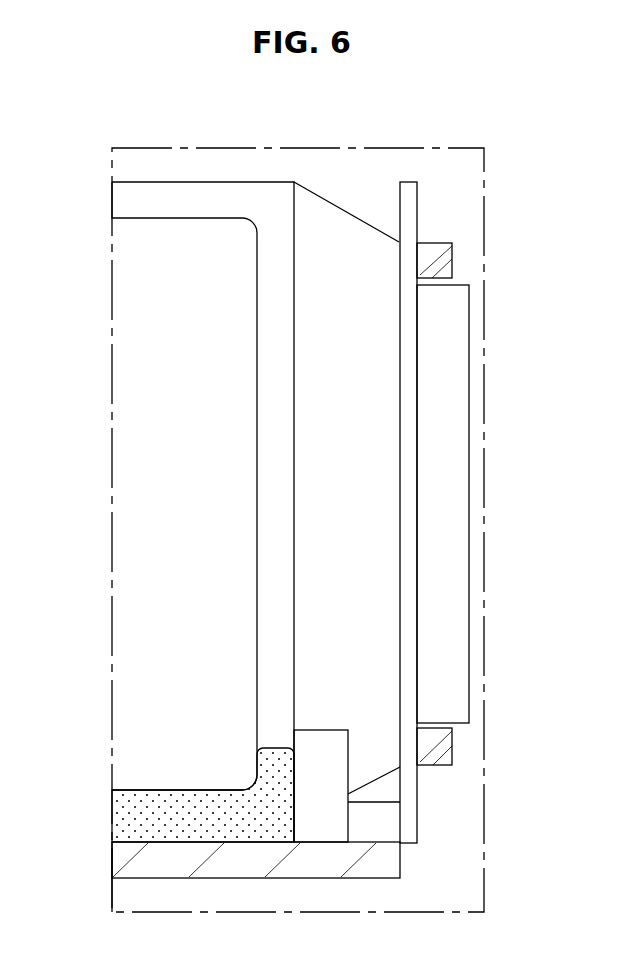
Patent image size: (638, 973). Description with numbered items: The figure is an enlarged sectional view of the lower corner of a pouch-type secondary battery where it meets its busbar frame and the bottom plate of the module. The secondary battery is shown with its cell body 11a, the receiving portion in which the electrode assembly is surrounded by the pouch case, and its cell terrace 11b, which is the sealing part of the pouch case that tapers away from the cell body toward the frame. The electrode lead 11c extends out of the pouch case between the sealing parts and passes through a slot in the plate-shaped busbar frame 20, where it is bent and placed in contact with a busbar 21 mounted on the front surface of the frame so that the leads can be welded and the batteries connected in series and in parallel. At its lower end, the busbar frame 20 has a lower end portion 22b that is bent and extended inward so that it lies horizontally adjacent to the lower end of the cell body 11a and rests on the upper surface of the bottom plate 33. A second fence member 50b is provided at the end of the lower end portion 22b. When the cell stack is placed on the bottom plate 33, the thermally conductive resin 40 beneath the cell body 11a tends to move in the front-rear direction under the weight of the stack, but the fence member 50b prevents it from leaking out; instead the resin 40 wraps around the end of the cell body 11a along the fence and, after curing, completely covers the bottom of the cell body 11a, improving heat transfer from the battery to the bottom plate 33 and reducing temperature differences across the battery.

The cell body 11a is at (148, 350).
The cell terrace 11b is at (312, 212).
The electrode lead 11c is at (443, 508).
The busbar frame 20 is at (424, 200).
The busbar 21 is at (438, 262).
The lower end portion of the second busbar frame 22b is at (380, 823).
The bottom plate 33 is at (250, 860).
The thermally conductive resin 40 is at (177, 820).
The second fence member 50b is at (322, 820).